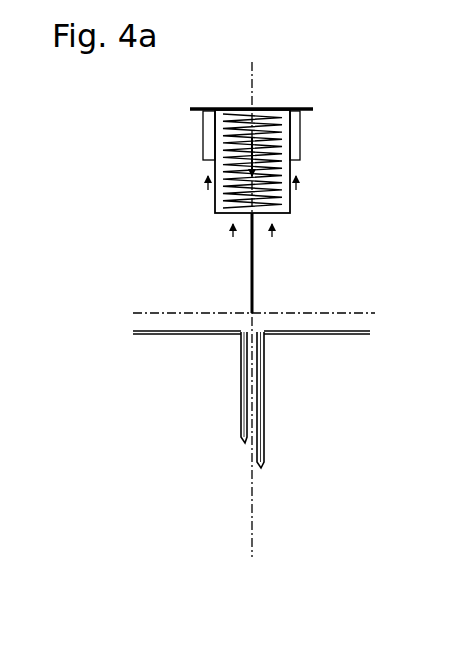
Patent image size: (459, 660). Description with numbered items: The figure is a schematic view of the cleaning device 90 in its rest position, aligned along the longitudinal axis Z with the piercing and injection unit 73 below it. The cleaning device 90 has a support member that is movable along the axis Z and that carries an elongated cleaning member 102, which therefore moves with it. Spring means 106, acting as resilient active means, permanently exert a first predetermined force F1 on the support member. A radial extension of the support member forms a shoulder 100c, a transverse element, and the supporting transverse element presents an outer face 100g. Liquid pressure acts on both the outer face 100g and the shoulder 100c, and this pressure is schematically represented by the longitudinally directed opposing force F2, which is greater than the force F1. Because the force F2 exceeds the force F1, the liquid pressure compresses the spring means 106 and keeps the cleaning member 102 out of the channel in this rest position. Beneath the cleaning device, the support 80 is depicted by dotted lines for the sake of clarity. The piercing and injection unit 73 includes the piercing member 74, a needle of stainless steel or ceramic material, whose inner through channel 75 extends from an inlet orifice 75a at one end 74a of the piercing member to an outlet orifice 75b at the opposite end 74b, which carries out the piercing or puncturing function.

The cleaning device 90 is at (192, 200).
The spring means 106 is at (215, 129).
The shoulder 100c is at (203, 147).
The outer face of supporting transverse element 100g is at (228, 216).
The first predetermined force F1 is at (296, 146).
The opposing force F2 is at (233, 238).
The elongated cleaning member 102 is at (254, 277).
The support 80 is at (350, 313).
The piercing and injection unit 73 is at (247, 388).
The piercing member 74 is at (290, 417).
The end of the piercing member 74a is at (264, 334).
The opposite end of the piercing member 74b is at (265, 464).
The inner through channel 75 is at (252, 373).
The inlet orifice 75a is at (247, 332).
The outlet orifice 75b is at (248, 446).
The longitudinal axis Z is at (250, 550).